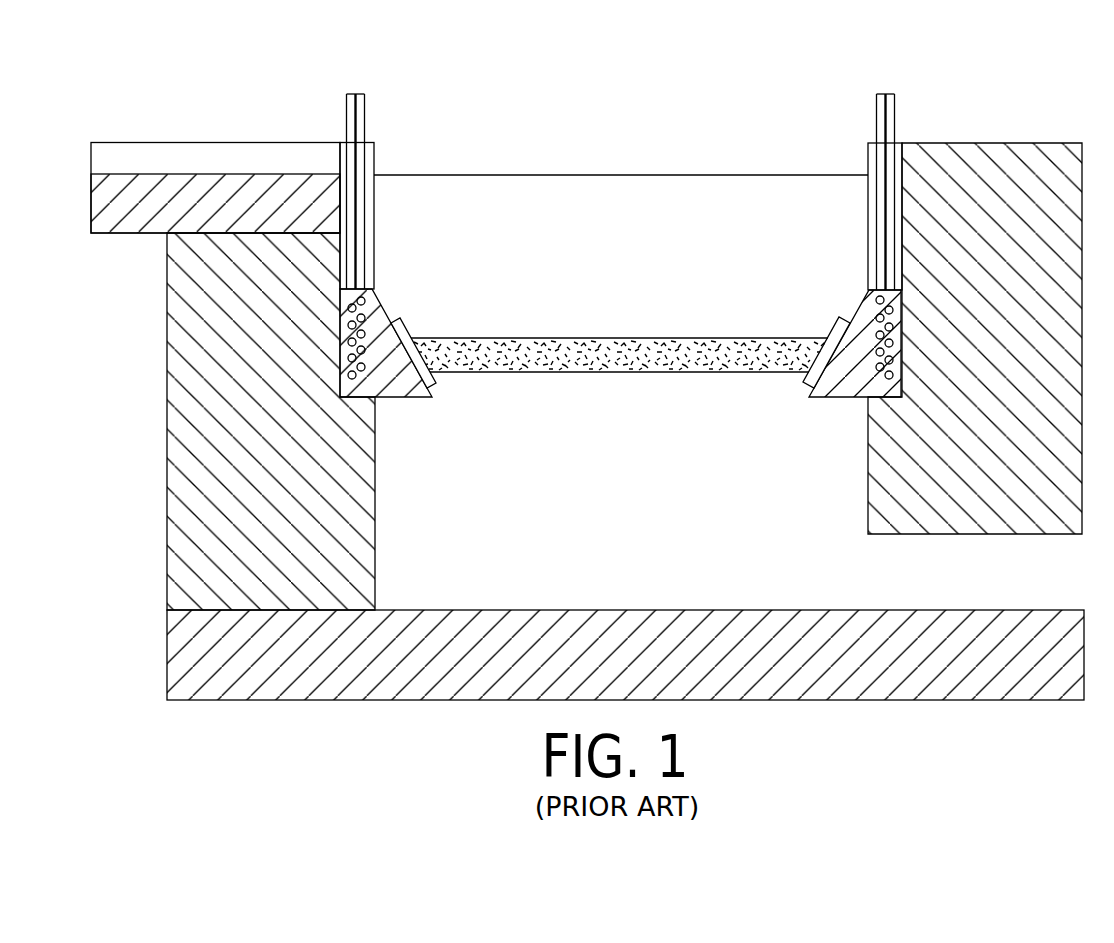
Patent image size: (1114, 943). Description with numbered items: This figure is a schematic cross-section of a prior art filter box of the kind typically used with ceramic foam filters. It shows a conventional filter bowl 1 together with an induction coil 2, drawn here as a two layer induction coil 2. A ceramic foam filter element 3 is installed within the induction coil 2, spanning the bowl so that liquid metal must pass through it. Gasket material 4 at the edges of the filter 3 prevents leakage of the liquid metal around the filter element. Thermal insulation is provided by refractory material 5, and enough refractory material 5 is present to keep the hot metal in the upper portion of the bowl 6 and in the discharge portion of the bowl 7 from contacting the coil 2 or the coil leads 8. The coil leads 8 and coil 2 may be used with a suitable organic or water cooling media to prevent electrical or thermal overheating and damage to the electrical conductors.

The filter bowl 1 is at (615, 170).
The induction coil 2 is at (375, 313).
The ceramic foam filter element 3 is at (667, 350).
The gasket material 4 is at (418, 350).
The refractory material 5 is at (379, 381).
The upper portion of the bowl 6 is at (613, 275).
The discharge portion of the bowl 7 is at (609, 474).
The coil leads 8 is at (360, 93).